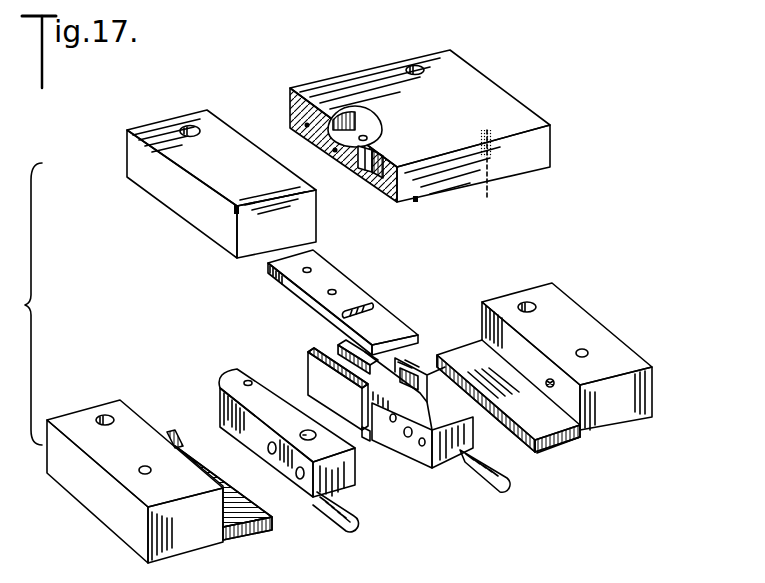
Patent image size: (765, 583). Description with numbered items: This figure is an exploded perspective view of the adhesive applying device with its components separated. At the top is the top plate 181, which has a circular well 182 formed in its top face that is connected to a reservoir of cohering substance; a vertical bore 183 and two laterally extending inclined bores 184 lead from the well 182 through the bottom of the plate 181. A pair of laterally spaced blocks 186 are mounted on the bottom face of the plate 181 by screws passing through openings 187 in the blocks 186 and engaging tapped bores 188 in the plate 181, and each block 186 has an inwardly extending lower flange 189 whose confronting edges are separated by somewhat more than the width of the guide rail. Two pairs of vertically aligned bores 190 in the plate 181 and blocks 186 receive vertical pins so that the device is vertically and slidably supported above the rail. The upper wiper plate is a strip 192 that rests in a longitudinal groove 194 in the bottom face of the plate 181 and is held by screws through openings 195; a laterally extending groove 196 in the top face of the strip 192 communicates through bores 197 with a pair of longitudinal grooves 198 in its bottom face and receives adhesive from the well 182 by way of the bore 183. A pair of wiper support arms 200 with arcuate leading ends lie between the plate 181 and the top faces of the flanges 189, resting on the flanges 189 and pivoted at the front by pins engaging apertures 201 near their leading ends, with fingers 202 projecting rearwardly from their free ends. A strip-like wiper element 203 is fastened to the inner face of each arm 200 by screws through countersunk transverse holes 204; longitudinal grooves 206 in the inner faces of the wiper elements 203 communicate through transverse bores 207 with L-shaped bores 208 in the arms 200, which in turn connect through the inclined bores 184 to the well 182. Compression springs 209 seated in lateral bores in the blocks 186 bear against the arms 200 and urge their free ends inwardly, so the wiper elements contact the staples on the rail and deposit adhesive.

The top plate 181 is at (507, 102).
The circular well 182 is at (357, 118).
The vertical bore 183 is at (360, 168).
The inclined bores 184 is at (367, 137).
The blocks 186 is at (73, 418).
The openings 187 is at (588, 353).
The tapped bores 188 is at (485, 174).
The lower flange 189 is at (567, 438).
The vertically aligned bores 190 is at (195, 127).
The strip 192 is at (357, 290).
The longitudinal groove 194 is at (412, 203).
The openings 195 is at (310, 268).
The laterally extending groove 196 is at (370, 304).
The bores 197 is at (376, 309).
The longitudinal grooves 198 is at (412, 353).
The wiper support arms 200 is at (350, 485).
The apertures 201 is at (248, 381).
The fingers 202 is at (343, 527).
The wiper element 203 is at (364, 433).
The countersunk transverse holes 204 is at (268, 452).
The longitudinal grooves 206 is at (422, 397).
The transverse bores 207 is at (330, 393).
The L-shaped bores 208 is at (306, 432).
The compression springs 209 is at (549, 386).